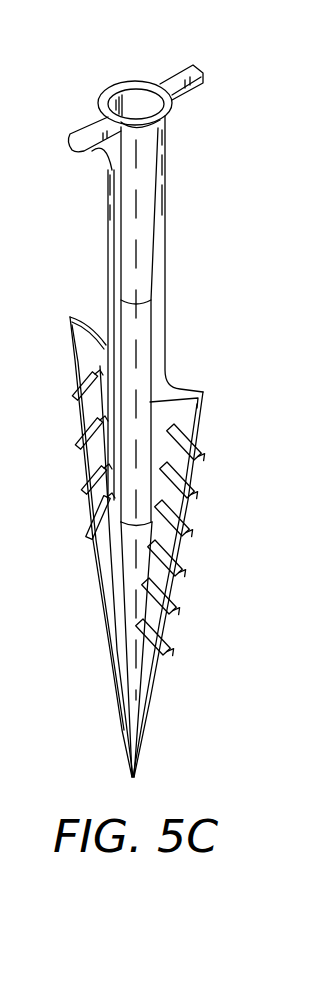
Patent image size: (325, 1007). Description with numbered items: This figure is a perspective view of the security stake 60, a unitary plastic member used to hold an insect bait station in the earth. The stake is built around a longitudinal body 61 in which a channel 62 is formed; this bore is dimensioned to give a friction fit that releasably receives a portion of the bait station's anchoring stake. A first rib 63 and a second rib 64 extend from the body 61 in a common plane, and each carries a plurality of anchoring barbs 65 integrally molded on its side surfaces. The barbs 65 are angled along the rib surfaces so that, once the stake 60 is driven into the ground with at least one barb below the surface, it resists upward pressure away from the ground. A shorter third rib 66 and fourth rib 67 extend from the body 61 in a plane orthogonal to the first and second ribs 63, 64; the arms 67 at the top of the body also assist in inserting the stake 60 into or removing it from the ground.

The security stake 60 is at (207, 563).
The longitudinal body 61 is at (140, 236).
The channel 62 is at (137, 110).
The first rib 63 is at (188, 420).
The second rib 64 is at (80, 340).
The anchoring barbs 65 is at (80, 404).
The third rib 66 is at (97, 582).
The fourth rib 67 is at (207, 76).